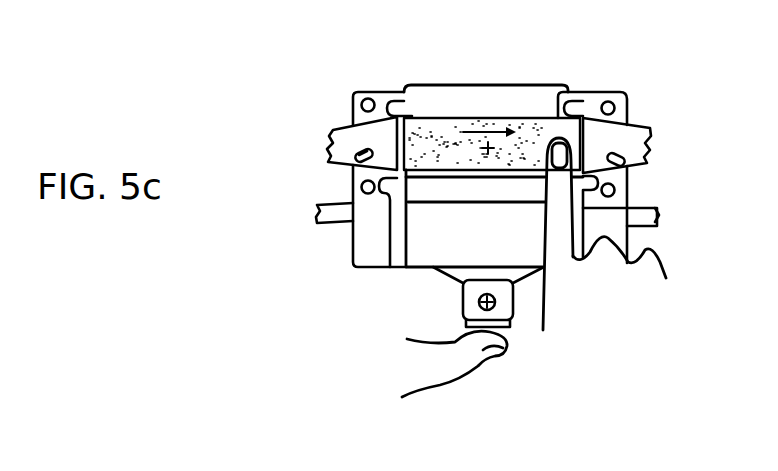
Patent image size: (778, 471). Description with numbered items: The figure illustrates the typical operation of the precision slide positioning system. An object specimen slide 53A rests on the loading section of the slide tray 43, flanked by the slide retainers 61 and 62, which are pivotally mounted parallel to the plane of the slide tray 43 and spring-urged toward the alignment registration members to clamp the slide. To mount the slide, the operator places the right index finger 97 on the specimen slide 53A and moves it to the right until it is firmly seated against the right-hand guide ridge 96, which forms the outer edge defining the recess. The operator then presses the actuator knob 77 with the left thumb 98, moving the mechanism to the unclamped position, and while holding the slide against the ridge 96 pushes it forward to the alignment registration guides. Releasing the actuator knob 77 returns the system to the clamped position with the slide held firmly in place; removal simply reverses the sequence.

The slide retainer 61 is at (343, 130).
The object specimen slide 53A is at (438, 128).
The slide tray 43 is at (613, 97).
The slide retainer 62 is at (643, 143).
The guide ridge 96 is at (627, 200).
The right index finger 97 is at (552, 190).
The left thumb 98 is at (452, 352).
The actuator knob 77 is at (507, 310).